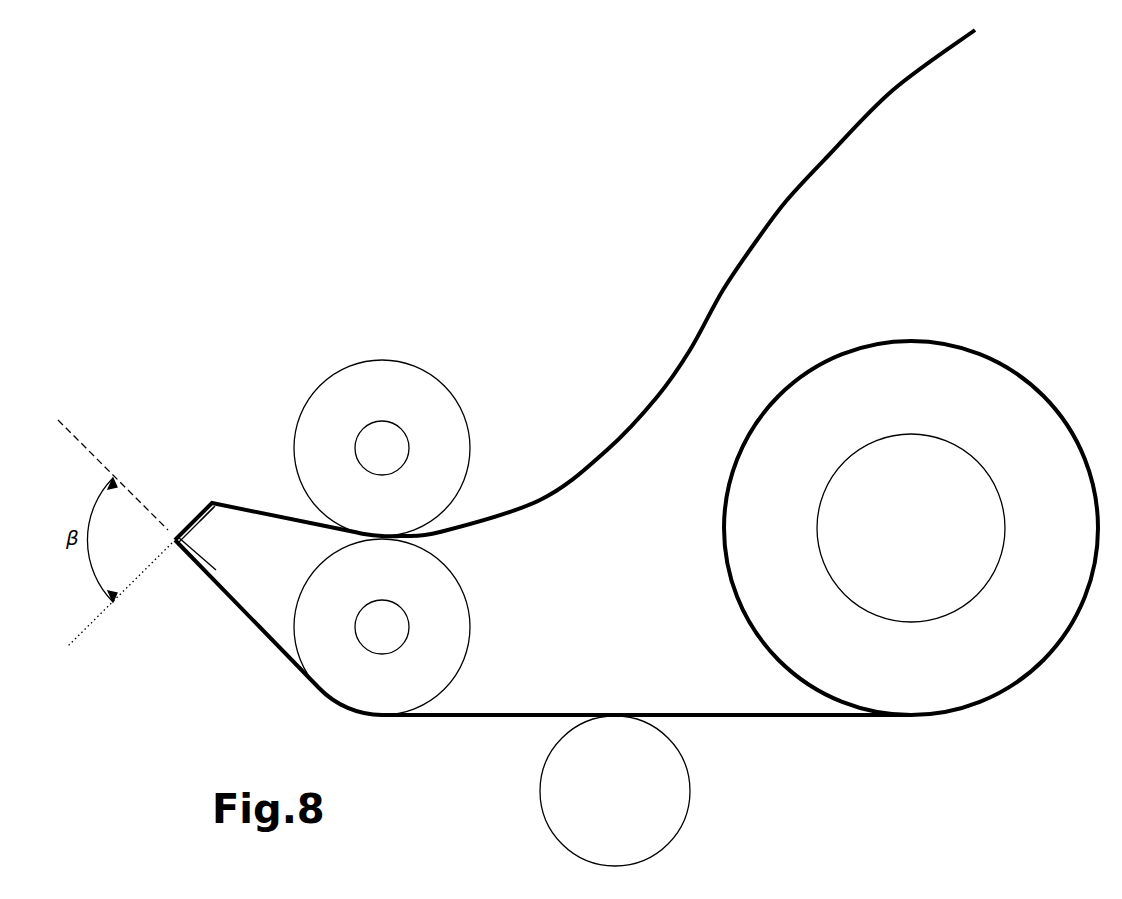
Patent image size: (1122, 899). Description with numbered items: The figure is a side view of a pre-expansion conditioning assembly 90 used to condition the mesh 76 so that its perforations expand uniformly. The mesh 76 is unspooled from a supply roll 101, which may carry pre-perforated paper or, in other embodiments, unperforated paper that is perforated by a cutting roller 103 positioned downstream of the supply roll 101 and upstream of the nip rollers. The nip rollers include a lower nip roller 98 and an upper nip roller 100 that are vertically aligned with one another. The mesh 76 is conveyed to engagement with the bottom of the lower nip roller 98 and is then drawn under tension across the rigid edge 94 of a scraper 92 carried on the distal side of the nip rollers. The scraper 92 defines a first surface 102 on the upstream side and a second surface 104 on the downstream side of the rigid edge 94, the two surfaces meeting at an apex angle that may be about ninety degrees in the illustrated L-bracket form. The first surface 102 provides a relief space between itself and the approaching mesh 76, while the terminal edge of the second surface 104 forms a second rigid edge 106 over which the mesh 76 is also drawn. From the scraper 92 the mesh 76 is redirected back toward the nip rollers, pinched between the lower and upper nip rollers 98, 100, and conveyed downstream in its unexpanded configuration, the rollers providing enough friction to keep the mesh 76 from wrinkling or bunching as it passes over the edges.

The mesh 76 is at (723, 288).
The pre-expansion conditioning assembly 90 is at (298, 317).
The scraper 92 is at (211, 538).
The rigid edge 94 is at (172, 538).
The lower nip roller 98 is at (470, 628).
The upper nip roller 100 is at (378, 360).
The supply roll 101 is at (914, 343).
The first surface 102 is at (197, 562).
The cutting roller 103 is at (540, 795).
The second surface 104 is at (205, 503).
The second rigid edge 106 is at (213, 500).